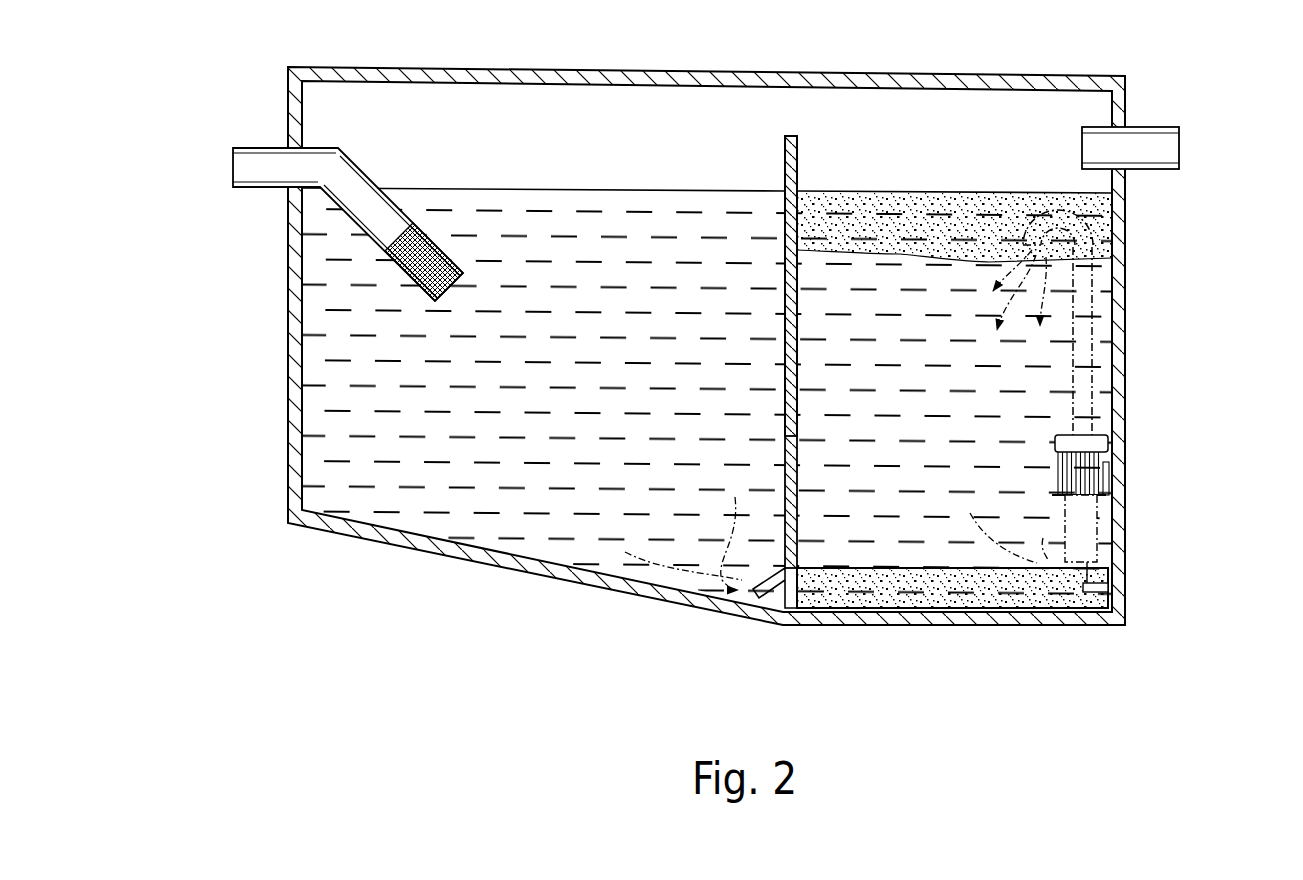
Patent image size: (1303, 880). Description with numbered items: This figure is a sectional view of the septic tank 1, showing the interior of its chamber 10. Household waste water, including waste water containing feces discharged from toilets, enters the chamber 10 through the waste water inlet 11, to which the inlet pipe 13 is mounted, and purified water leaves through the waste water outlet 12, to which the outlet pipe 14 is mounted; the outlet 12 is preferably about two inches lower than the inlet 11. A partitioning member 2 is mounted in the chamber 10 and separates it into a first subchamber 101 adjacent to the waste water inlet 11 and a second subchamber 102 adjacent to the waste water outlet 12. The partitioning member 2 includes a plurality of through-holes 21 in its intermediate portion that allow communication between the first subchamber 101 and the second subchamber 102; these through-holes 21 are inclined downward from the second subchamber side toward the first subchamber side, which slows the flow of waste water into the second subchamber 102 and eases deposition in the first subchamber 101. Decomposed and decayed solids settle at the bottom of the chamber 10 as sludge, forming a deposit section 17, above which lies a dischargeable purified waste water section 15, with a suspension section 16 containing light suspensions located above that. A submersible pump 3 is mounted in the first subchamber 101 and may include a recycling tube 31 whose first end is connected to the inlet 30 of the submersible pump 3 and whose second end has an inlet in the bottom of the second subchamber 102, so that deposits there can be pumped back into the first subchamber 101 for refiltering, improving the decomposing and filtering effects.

The grease separation apparatus 1 is at (1165, 652).
The chamber 10 is at (712, 117).
The first subchamber 101 is at (905, 598).
The second subchamber 102 is at (587, 540).
The waste water inlet 11 is at (1123, 172).
The waste water outlet 12 is at (290, 192).
The inlet pipe 13 is at (1167, 128).
The outlet pipe 14 is at (247, 149).
The dischargeable purified waste water section 15 is at (1102, 362).
The suspension section 16 is at (1107, 238).
The deposit section 17 is at (1010, 626).
The partitioning member 2 is at (797, 556).
The through-holes 21 is at (793, 285).
The submersible pump 3 is at (1088, 520).
The inlet of the submersible pump 30 is at (1107, 583).
The recycling tube 31 is at (870, 585).